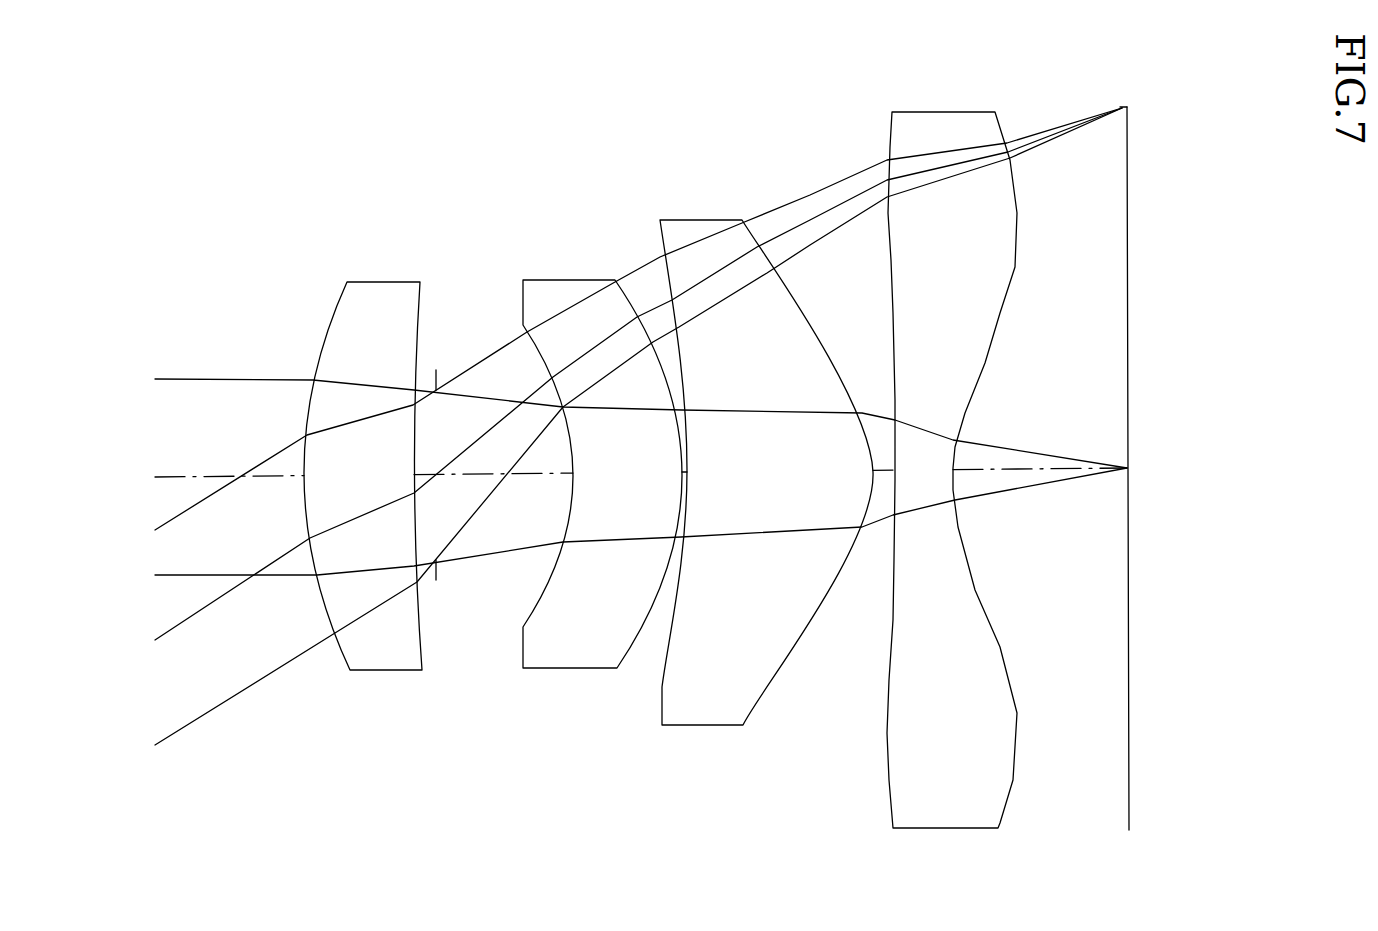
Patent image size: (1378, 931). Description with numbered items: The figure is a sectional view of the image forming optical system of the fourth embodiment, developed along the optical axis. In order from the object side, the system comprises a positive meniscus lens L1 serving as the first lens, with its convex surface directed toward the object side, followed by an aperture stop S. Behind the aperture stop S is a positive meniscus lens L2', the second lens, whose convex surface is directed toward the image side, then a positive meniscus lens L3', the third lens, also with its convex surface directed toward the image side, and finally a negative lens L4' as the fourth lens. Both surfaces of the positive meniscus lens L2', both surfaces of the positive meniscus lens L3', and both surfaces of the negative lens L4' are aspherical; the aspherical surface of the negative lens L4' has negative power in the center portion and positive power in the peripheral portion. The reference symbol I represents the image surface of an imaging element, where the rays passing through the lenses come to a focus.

The positive meniscus lens L1 is at (337, 298).
The aperture stop S is at (440, 367).
The positive meniscus lens L2' is at (592, 392).
The positive meniscus lens L3' is at (766, 414).
The negative lens L4' is at (952, 433).
The image surface I is at (1130, 208).